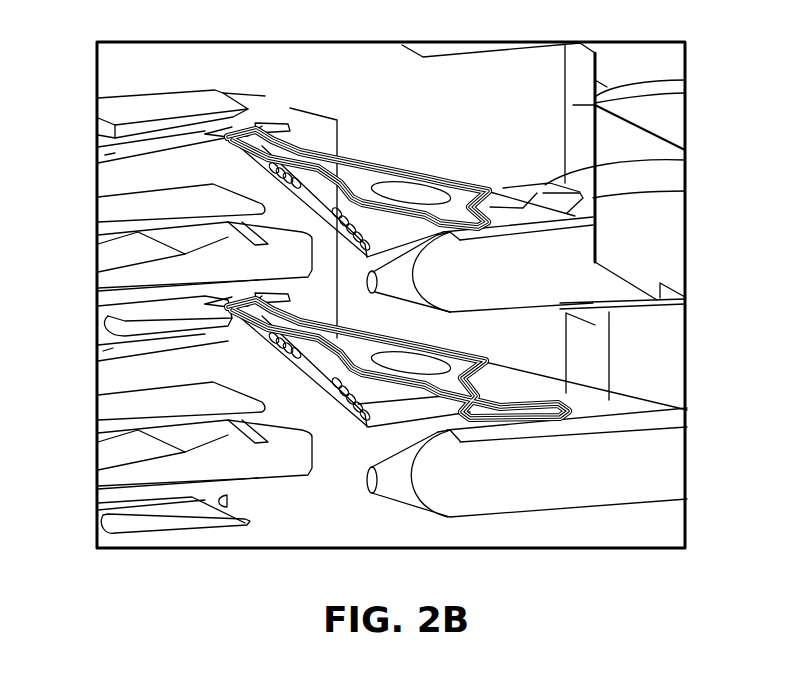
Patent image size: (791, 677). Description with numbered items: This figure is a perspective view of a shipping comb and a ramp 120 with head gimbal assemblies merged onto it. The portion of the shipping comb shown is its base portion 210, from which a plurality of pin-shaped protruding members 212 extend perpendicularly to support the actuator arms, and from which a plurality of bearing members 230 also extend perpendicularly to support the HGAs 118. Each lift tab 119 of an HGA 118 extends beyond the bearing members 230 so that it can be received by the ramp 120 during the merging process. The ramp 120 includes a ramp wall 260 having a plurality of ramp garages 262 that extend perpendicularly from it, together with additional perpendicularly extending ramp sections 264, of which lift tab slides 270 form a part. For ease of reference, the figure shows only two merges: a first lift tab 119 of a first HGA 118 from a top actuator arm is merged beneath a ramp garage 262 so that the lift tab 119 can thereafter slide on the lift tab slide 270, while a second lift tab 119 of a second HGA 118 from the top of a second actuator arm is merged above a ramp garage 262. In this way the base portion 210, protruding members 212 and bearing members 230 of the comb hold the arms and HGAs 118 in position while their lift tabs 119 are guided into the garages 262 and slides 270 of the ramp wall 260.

The HGA 118 is at (403, 172).
The lift tab 119 is at (222, 128).
The ramp 120 is at (106, 97).
The base portion 210 is at (685, 95).
The pin-shaped protruding member 212 is at (685, 191).
The bearing member 230 is at (685, 160).
The ramp wall 260 is at (310, 128).
The ramp garage 262 is at (220, 98).
The ramp section 264 is at (165, 231).
The lift tab slide 270 is at (105, 155).